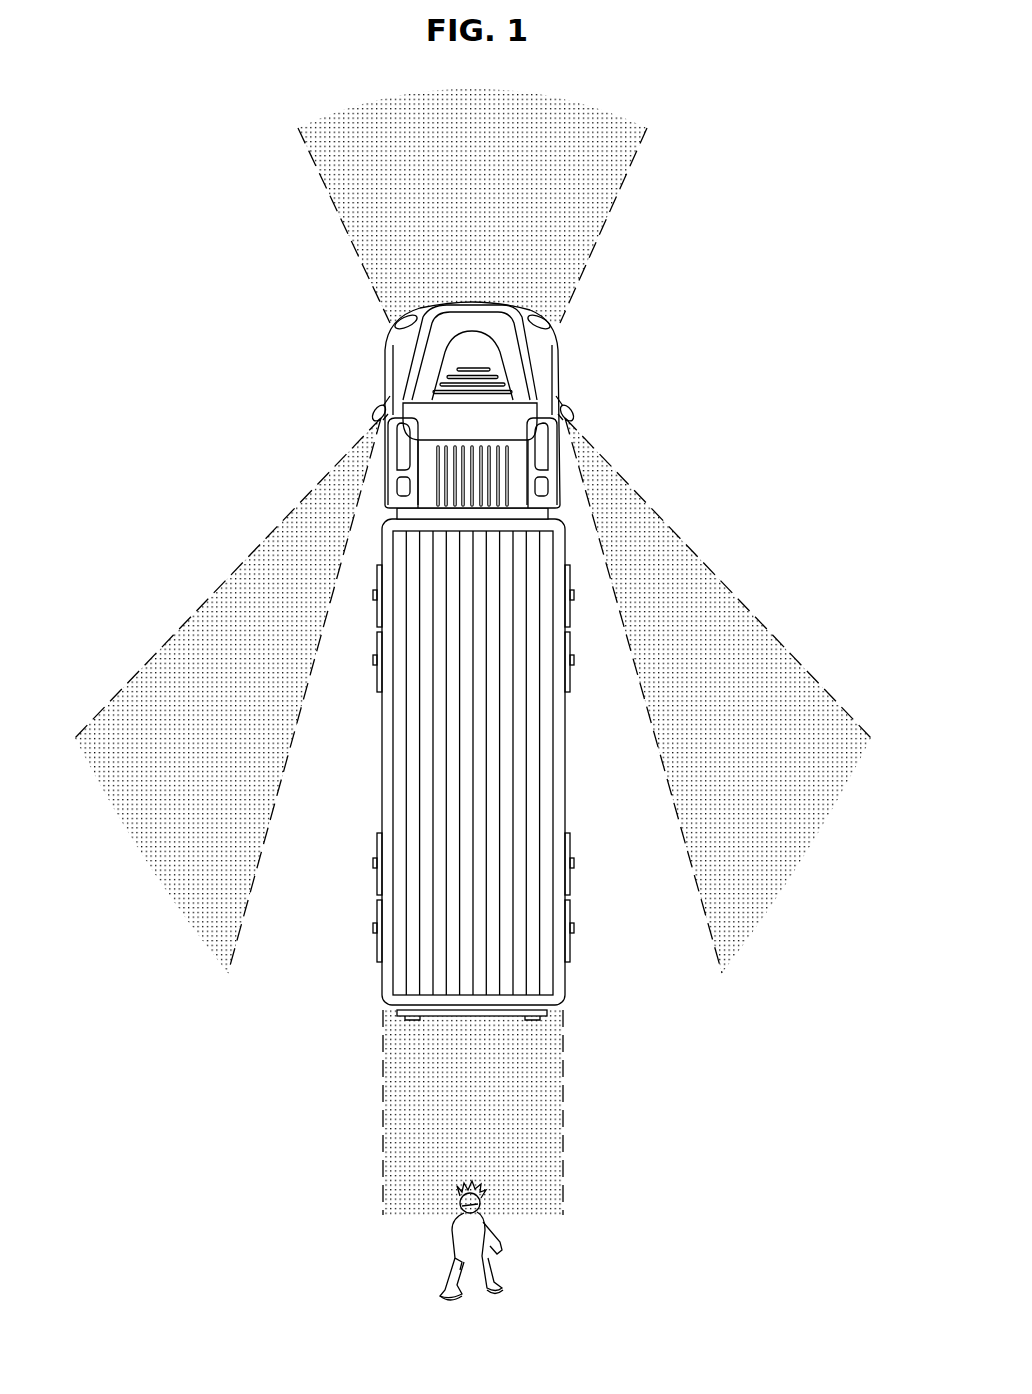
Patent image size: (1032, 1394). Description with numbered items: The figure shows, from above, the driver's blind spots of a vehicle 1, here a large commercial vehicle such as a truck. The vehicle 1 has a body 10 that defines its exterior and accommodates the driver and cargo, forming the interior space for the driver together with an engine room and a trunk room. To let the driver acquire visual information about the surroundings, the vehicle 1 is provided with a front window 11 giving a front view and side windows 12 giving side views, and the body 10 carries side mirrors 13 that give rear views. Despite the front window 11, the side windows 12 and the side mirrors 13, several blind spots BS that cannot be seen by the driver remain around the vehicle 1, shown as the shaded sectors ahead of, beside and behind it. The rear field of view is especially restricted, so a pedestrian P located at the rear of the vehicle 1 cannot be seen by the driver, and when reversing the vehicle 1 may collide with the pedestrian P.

The vehicle 1 is at (318, 318).
The body 10 is at (516, 405).
The front window 11 is at (528, 408).
The side windows 12 is at (395, 452).
The side mirrors 13 is at (373, 410).
The blind spots BS is at (605, 200).
The pedestrian P is at (456, 1245).